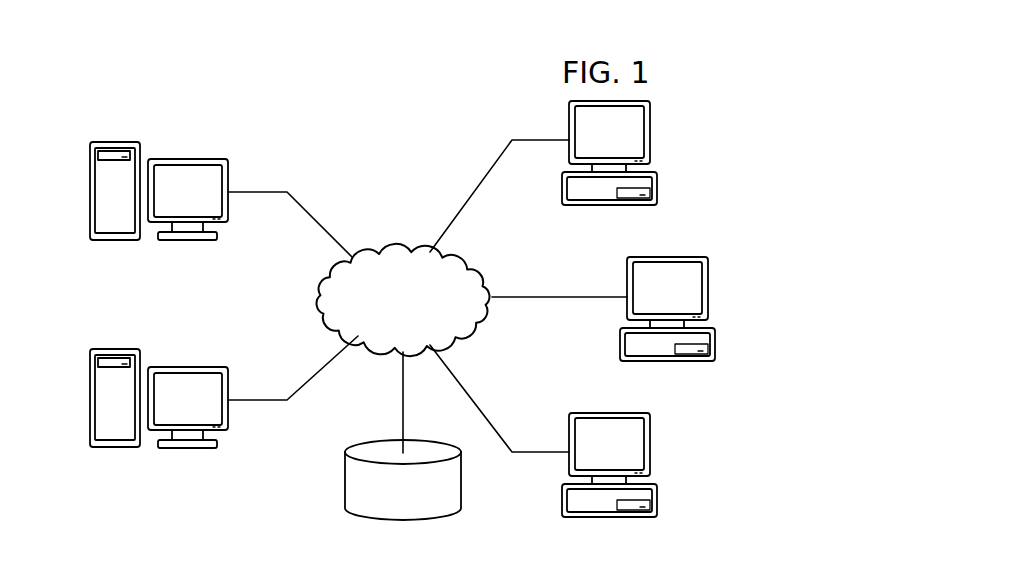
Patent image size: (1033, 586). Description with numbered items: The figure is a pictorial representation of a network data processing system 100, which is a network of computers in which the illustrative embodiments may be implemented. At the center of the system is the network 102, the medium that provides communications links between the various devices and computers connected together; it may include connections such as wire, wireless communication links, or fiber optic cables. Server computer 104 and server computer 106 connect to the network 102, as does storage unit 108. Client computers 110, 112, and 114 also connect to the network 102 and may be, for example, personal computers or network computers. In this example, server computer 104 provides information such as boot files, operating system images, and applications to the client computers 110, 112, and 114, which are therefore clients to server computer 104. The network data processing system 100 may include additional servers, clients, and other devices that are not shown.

The network data processing system 100 is at (289, 113).
The network 102 is at (400, 246).
The server computer 104 is at (90, 190).
The server computer 106 is at (90, 400).
The storage unit 108 is at (345, 481).
The client computer 110 is at (657, 190).
The client computer 112 is at (716, 345).
The client computer 114 is at (657, 500).